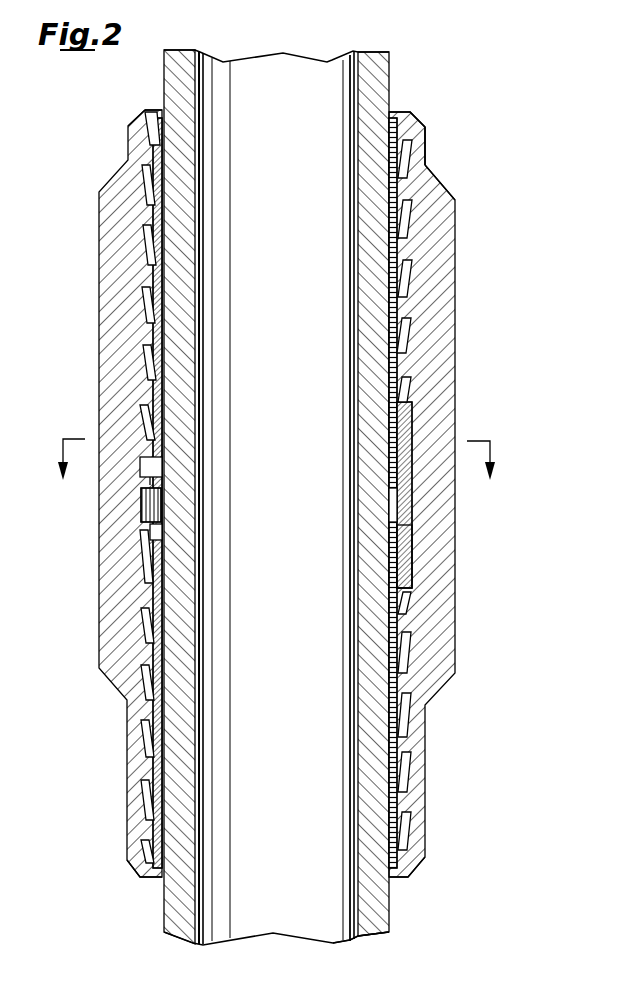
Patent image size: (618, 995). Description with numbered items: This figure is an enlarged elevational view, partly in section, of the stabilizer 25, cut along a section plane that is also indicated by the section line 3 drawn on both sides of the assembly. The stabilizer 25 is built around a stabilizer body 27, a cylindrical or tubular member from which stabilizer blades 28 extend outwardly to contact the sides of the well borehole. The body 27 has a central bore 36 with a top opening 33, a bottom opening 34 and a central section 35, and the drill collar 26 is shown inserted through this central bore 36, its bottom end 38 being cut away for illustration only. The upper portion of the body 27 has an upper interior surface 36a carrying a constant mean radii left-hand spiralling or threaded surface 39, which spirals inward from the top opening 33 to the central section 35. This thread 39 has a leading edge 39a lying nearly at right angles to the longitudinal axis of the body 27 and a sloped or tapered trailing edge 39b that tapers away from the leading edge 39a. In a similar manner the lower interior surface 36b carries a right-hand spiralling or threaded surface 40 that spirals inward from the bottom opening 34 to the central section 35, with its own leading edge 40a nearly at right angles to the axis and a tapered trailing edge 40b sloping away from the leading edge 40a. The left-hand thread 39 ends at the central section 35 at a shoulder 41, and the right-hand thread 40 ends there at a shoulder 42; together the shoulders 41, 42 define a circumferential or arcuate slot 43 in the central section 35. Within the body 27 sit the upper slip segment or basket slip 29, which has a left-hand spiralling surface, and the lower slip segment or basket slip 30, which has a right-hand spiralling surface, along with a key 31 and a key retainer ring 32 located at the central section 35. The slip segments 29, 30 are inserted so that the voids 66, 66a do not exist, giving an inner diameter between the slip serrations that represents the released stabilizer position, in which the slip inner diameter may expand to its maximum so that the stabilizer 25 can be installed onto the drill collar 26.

The section line 3— 3 is at (277, 453).
The stabilizer 25 is at (88, 337).
The drill collar 26 is at (390, 60).
The stabilizer body 27 is at (458, 292).
The stabilizer blades 28 is at (413, 232).
The upper slip segment or basket slip 29 is at (150, 215).
The lower slip segment or basket slip 30 is at (150, 657).
The key 31 is at (412, 515).
The key retainer ring 32 is at (405, 495).
The top opening 33 is at (160, 110).
The bottom opening 34 is at (396, 880).
The central section 35 is at (445, 435).
The central bore 36 is at (403, 96).
The upper interior surface 36a is at (412, 158).
The lower interior surface 36b is at (410, 607).
The bottom end 38 is at (375, 938).
The left-hand spiralling or threaded surface 39 is at (418, 222).
The leading edge 39a is at (140, 157).
The sloped or tapered trailing edge 39b is at (147, 182).
The right-hand spiralling or threaded surface 40 is at (410, 652).
The leading edge 40a is at (145, 830).
The sloped or tapered trailing edge 40b is at (140, 807).
The shoulder 41 is at (152, 463).
The shoulder 42 is at (148, 530).
The circumferential or arcuate slot 43 is at (143, 508).
The void 66 is at (148, 300).
The void 66a is at (145, 745).